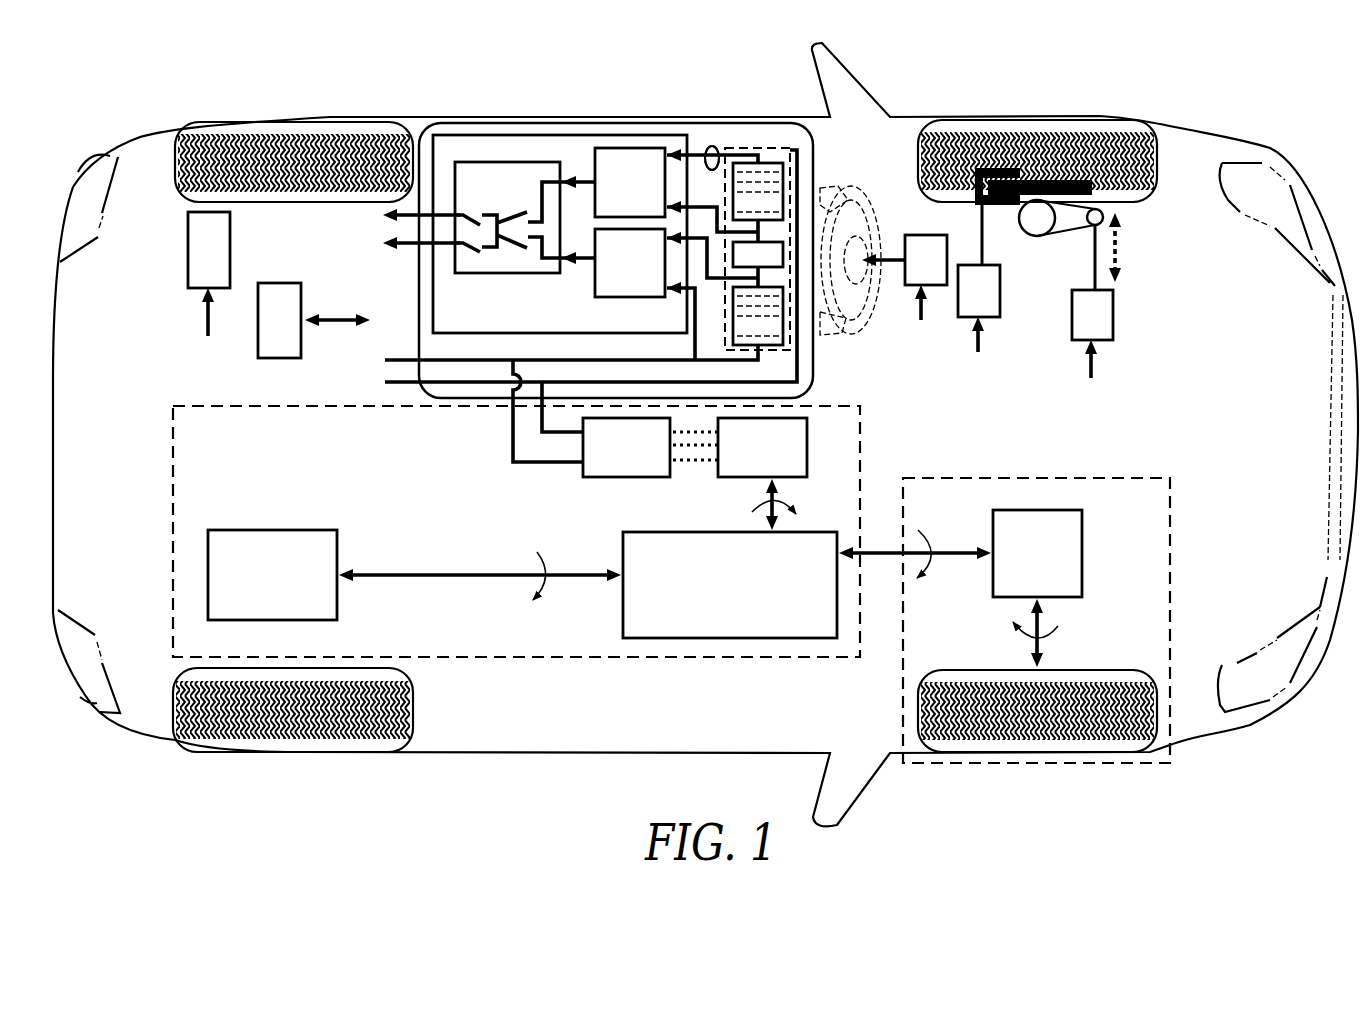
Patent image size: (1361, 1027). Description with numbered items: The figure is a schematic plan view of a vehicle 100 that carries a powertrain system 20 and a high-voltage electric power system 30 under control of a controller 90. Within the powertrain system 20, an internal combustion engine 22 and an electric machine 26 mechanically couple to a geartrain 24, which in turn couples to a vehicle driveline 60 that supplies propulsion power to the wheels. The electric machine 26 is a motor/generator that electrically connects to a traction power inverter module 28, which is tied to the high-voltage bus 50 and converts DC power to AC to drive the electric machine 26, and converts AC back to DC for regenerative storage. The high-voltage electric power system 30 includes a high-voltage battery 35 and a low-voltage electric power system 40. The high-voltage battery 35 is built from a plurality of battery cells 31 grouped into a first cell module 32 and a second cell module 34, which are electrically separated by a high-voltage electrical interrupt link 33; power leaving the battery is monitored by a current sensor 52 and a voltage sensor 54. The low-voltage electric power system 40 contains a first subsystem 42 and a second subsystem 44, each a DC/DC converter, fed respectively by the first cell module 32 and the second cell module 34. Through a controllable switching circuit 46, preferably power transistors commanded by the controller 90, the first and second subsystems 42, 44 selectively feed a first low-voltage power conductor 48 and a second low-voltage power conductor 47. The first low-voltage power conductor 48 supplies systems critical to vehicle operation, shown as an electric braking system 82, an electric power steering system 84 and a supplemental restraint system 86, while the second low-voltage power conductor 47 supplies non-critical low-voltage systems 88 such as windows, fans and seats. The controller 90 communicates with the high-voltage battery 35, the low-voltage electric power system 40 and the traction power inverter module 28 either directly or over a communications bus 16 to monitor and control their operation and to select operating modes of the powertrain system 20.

The vehicle 100 is at (705, 434).
The communications bus 16 is at (337, 307).
The powertrain system 20 is at (872, 446).
The internal combustion engine 22 is at (414, 575).
The geartrain 24 is at (807, 585).
The electric machine 26 is at (762, 474).
The traction power inverter module 28 is at (650, 447).
The high-voltage electric power system 30 is at (731, 112).
The battery cells 31 is at (776, 178).
The first cell module 32 is at (758, 191).
The high-voltage electrical interrupt link 33 is at (772, 252).
The second cell module 34 is at (758, 316).
The high-voltage energy storage device 35 is at (765, 138).
The low-voltage electric power system 40 is at (478, 125).
The first subsystem 42 is at (630, 182).
The second subsystem 44 is at (630, 263).
The controllable switching circuit 46 is at (525, 217).
The second low-voltage power conductor 47 is at (398, 228).
The first low-voltage power conductor 48 is at (398, 250).
The high-voltage bus 50 is at (386, 382).
The current sensor 52 is at (662, 105).
The voltage sensor 54 is at (712, 145).
The vehicle driveline 60 is at (987, 468).
The electric braking system 82 is at (1025, 242).
The electric power steering system 84 is at (1070, 270).
The supplemental restraint system 86 is at (904, 260).
The low-voltage systems associated with non-critical vehicle operations 88 is at (209, 250).
The controller 90 is at (279, 320).